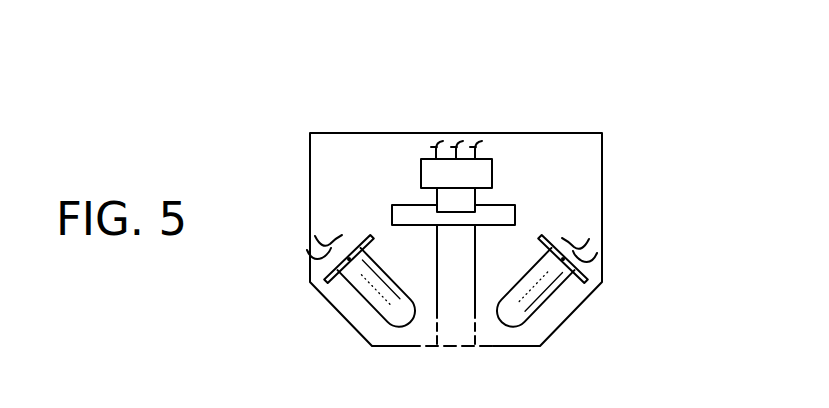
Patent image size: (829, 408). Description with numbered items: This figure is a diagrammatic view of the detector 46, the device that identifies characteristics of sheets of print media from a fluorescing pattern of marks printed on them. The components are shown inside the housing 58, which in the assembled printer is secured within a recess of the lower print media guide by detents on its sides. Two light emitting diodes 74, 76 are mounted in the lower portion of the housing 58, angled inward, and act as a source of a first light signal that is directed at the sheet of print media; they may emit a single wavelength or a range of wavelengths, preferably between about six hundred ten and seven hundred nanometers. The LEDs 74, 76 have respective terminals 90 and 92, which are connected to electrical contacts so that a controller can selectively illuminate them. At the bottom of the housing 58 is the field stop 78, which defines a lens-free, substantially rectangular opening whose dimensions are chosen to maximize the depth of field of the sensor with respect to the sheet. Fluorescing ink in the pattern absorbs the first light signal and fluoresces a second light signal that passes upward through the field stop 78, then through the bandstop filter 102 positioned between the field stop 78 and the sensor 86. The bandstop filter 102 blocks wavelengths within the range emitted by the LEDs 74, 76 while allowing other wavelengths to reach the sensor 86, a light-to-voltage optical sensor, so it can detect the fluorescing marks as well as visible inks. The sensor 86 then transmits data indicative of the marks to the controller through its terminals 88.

The detector 46 is at (607, 144).
The housing 58 is at (603, 177).
The light emitting diode 74 is at (368, 294).
The light emitting diode 76 is at (534, 296).
The field stop 78 is at (453, 347).
The sensor 86 is at (462, 199).
The terminals 88 is at (443, 141).
The terminals 90 is at (307, 250).
The terminals 92 is at (597, 253).
The bandstop filter 102 is at (400, 210).